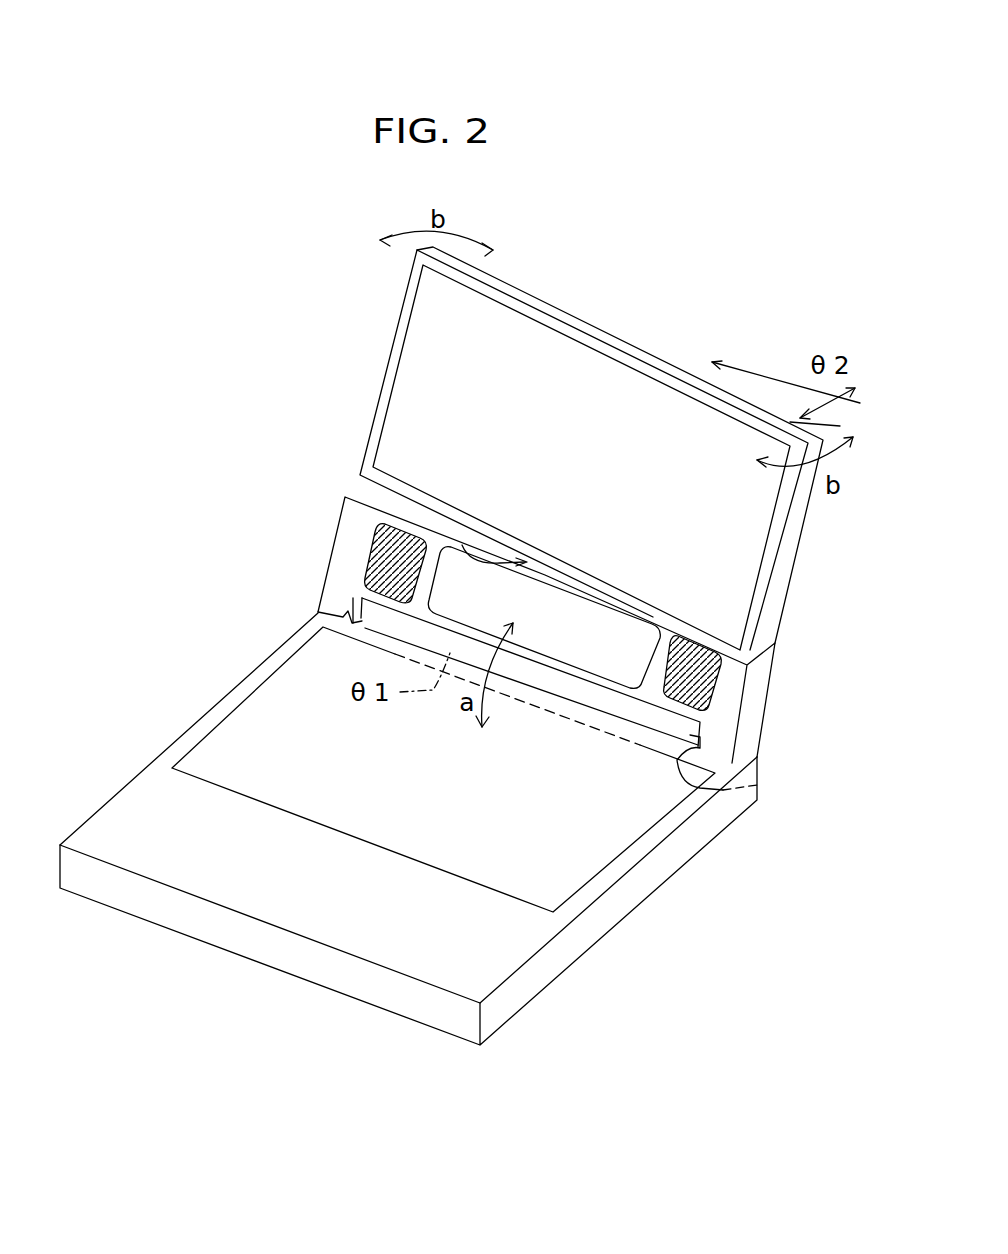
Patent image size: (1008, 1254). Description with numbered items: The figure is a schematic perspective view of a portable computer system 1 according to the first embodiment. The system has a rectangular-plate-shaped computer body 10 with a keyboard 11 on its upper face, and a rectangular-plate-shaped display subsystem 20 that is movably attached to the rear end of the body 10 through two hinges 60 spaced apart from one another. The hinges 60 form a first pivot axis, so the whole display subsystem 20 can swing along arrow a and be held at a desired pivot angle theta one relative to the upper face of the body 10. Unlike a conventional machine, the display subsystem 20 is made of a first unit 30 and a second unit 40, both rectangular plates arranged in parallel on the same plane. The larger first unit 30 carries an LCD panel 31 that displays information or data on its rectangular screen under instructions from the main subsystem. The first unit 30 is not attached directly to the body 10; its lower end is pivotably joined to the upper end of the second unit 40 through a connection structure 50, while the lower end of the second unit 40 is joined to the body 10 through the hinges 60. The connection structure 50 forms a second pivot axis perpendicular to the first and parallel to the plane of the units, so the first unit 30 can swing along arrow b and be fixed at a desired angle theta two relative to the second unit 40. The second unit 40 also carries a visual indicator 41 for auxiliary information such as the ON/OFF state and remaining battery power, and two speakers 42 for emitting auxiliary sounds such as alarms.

The portable computer system 1 is at (236, 980).
The computer body 10 is at (582, 934).
The keyboard 11 is at (620, 840).
The display subsystem 20 is at (345, 243).
The first unit 30 is at (396, 317).
The LCD panel 31 is at (410, 390).
The second unit 40 is at (336, 507).
The visual indicator 41 is at (450, 577).
The speakers 42 is at (365, 550).
The connection structure 50 is at (445, 497).
The hinges 60 is at (317, 612).